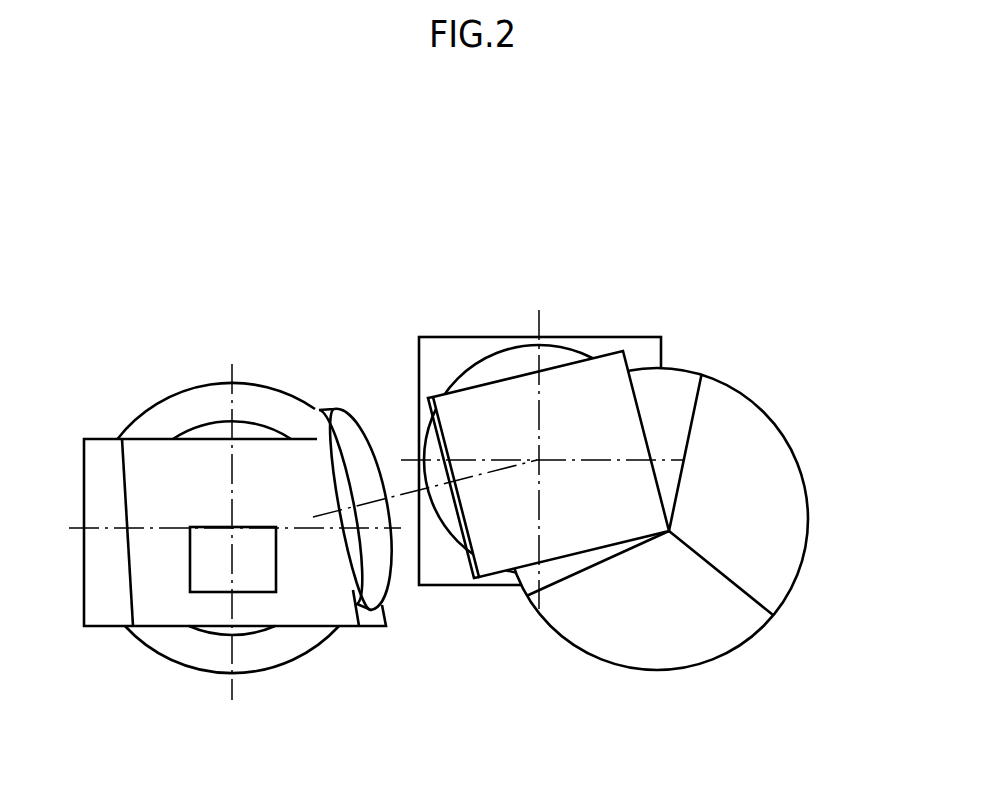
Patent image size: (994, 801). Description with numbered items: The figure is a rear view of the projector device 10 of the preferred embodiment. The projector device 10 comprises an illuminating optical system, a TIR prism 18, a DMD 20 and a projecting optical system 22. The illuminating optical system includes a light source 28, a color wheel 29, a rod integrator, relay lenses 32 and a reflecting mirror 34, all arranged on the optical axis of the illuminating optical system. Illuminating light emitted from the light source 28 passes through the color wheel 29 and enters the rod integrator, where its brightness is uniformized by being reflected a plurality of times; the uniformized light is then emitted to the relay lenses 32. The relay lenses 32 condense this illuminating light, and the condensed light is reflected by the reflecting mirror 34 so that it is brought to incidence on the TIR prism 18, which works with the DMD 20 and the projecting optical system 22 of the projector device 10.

The projector device 10 is at (783, 218).
The TIR prism 18 is at (105, 455).
The DMD 20 is at (256, 577).
The projecting optical system 22 is at (198, 405).
The light source 28 is at (603, 350).
The color wheel 29 is at (793, 523).
The relay lenses 32 is at (500, 363).
The reflecting mirror 34 is at (500, 543).